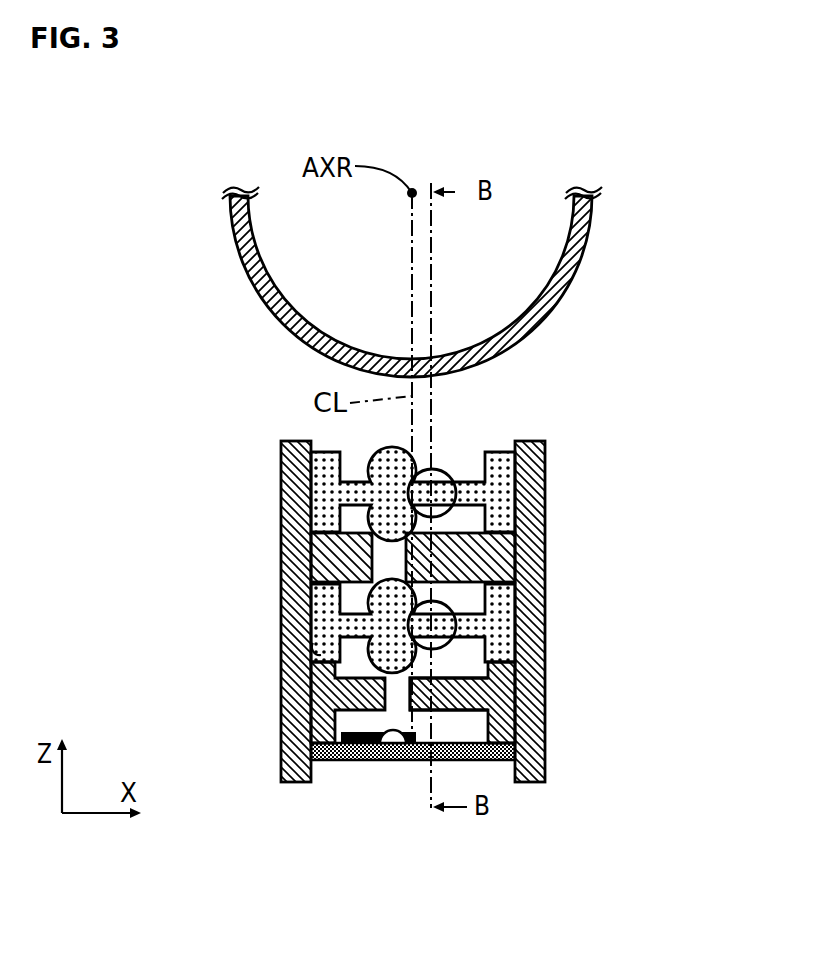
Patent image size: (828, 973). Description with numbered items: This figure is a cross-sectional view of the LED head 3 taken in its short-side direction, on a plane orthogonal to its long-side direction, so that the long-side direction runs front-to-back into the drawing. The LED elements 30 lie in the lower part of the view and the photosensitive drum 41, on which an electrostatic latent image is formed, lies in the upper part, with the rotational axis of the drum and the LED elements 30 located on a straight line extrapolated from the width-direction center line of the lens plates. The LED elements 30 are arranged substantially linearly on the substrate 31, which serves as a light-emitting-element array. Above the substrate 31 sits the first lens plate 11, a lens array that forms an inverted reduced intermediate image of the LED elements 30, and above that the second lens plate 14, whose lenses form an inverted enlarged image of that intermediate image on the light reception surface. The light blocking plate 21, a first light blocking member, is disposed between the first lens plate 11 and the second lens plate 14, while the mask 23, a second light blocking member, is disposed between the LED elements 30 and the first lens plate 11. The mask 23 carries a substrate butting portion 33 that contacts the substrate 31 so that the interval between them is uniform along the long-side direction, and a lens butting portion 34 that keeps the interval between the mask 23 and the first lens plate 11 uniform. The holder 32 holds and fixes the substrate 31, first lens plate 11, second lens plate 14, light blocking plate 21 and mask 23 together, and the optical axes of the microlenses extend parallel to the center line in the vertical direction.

The LED head 3 is at (243, 436).
The first lens plate 11 is at (505, 623).
The second lens plate 14 is at (502, 472).
The light blocking plate 21 is at (503, 558).
The mask 23 is at (470, 693).
The LED elements 30 is at (410, 762).
The substrate 31 is at (342, 762).
The holder 32 is at (281, 485).
The substrate butting portion 33 is at (333, 720).
The lens butting portion 34 is at (318, 643).
The photosensitive drum 41 is at (580, 265).